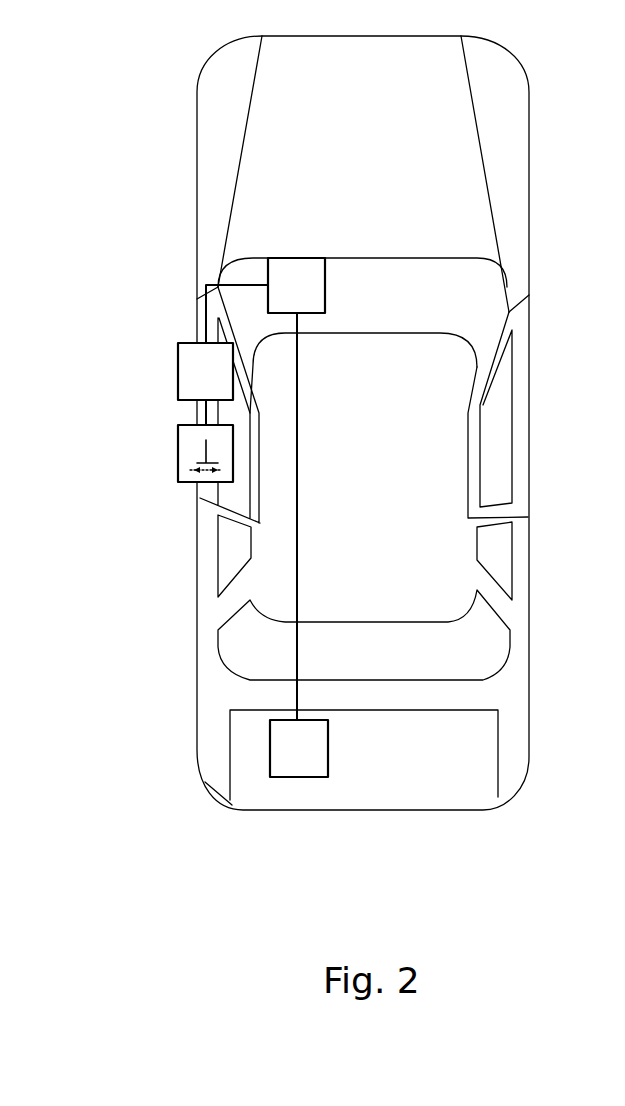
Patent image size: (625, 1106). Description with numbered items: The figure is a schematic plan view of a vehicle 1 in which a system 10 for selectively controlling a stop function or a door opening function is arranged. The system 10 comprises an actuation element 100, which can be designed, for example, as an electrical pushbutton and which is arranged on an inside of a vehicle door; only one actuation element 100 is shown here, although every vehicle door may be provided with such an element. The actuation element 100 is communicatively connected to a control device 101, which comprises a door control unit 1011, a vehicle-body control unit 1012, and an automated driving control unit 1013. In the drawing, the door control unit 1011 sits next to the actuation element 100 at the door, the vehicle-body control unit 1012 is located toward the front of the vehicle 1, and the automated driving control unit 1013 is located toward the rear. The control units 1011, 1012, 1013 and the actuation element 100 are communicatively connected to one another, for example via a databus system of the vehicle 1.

The vehicle 1 is at (529, 148).
The system 10 is at (117, 492).
The actuation element 100 is at (178, 438).
The control device 101 is at (355, 610).
The door control unit 1011 is at (178, 357).
The vehicle-body control unit 1012 is at (313, 258).
The automated driving control unit 1013 is at (270, 743).